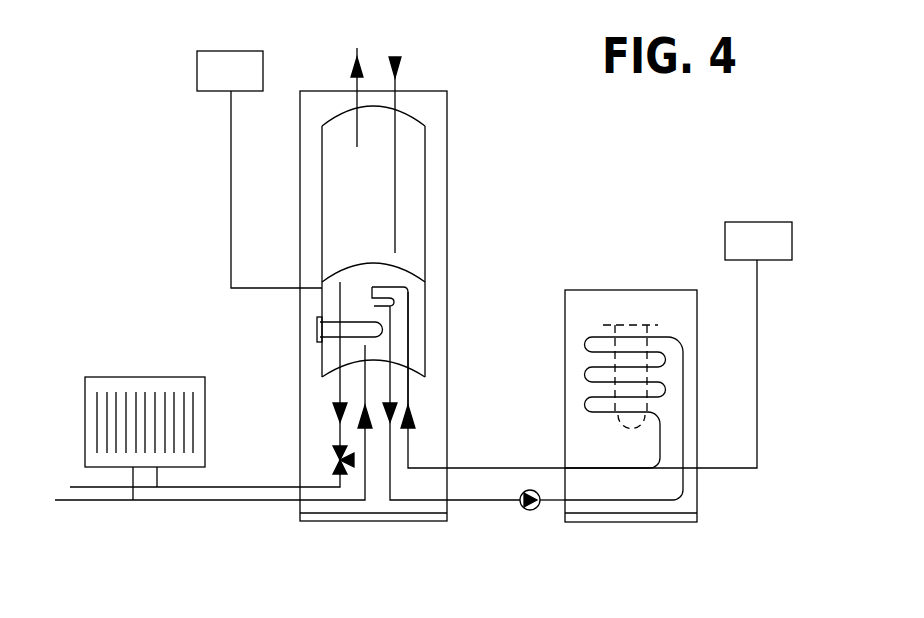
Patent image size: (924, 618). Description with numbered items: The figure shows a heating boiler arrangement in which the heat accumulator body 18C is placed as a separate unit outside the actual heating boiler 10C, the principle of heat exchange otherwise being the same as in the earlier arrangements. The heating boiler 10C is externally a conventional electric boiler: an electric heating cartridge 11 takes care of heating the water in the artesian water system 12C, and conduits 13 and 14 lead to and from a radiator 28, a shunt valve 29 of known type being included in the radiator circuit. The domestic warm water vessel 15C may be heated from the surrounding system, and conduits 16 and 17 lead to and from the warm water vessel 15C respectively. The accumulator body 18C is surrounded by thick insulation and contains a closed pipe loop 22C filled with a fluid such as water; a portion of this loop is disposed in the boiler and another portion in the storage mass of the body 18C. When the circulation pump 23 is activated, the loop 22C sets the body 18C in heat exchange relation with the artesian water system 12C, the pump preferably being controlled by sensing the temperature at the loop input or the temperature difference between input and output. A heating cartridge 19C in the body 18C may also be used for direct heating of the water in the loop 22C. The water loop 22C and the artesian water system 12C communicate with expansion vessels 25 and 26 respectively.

The heating boiler 10C is at (452, 212).
The domestic warm water vessel 15C is at (410, 153).
The conduit from warm water vessel 17 is at (352, 82).
The conduit to warm water vessel 16 is at (400, 82).
The artesian water system 12C is at (352, 291).
The electric heating cartridge 11 is at (352, 332).
The conduit to radiators 13 is at (335, 384).
The conduit from radiators 14 is at (367, 393).
The closed pipe loop 22C is at (423, 431).
The shunt valve 29 is at (332, 460).
The radiator 28 is at (197, 428).
The expansion vessel 26 is at (210, 75).
The expansion vessel 25 is at (737, 238).
The circulation pump 23 is at (528, 512).
The heat accumulator body 18C is at (640, 442).
The heating cartridge 19C is at (625, 385).